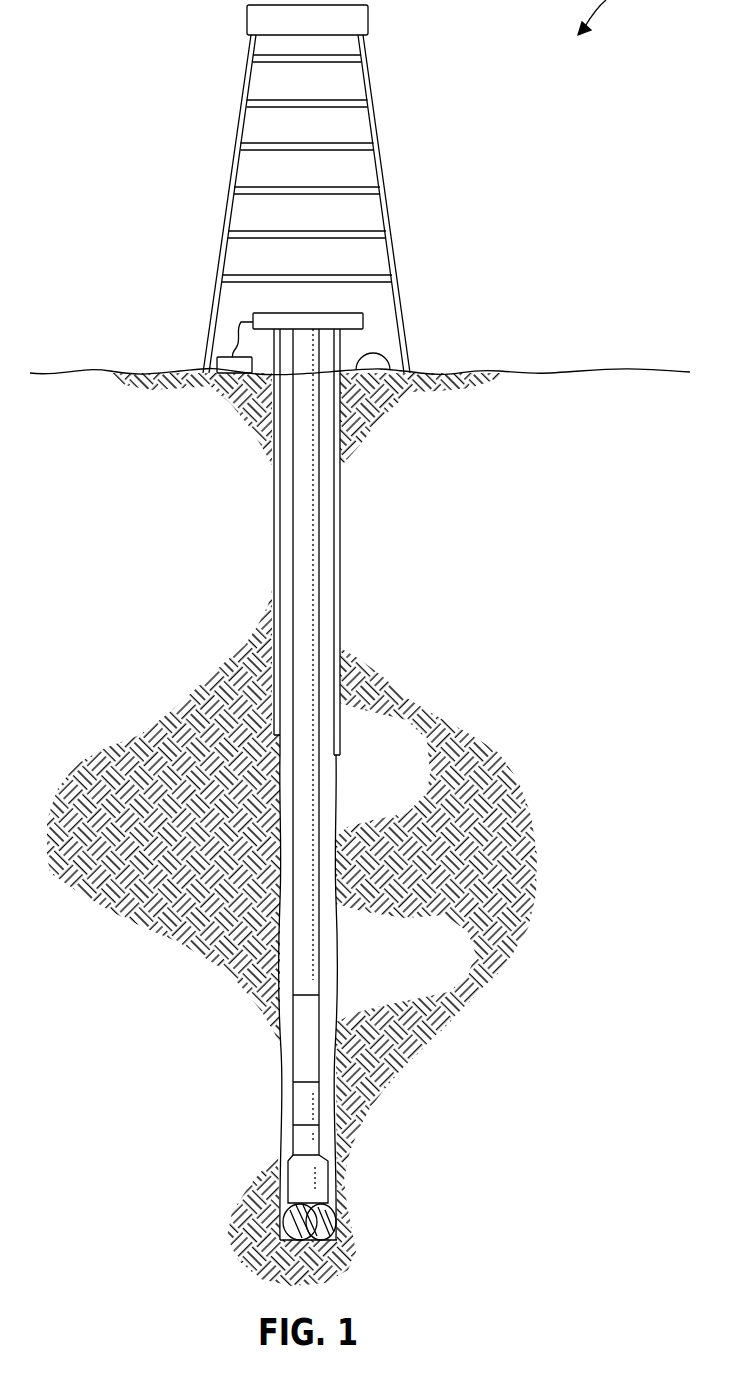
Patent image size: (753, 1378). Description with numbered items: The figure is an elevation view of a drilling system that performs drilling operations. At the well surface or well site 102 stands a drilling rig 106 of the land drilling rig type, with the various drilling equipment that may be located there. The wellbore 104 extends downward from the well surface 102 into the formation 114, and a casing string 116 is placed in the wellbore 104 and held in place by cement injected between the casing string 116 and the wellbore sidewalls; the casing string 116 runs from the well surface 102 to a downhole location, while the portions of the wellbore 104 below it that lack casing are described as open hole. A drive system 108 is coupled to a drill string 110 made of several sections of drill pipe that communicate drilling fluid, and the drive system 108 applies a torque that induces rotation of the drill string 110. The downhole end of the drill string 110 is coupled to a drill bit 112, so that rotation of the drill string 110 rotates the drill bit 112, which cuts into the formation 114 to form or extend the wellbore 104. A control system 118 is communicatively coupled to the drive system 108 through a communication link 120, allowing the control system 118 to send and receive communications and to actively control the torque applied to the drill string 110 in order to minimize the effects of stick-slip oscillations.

The well surface 102 is at (389, 372).
The wellbore 104 is at (336, 932).
The drilling rig 106 is at (392, 208).
The drive system 108 is at (363, 322).
The drill string 110 is at (320, 805).
The drill bit 112 is at (330, 1178).
The formation 114 is at (207, 873).
The casing string 116 is at (340, 625).
The control system 118 is at (218, 365).
The communication link 120 is at (238, 322).